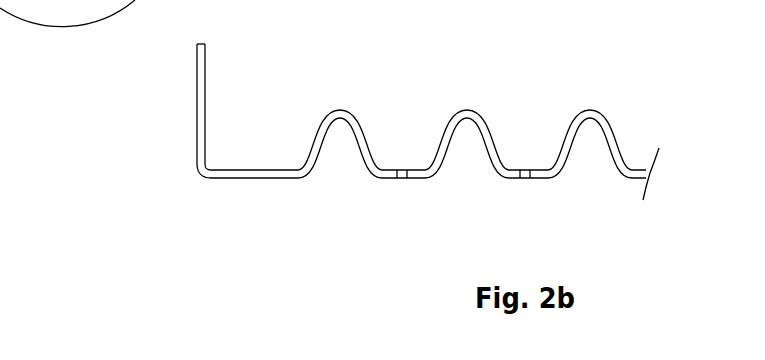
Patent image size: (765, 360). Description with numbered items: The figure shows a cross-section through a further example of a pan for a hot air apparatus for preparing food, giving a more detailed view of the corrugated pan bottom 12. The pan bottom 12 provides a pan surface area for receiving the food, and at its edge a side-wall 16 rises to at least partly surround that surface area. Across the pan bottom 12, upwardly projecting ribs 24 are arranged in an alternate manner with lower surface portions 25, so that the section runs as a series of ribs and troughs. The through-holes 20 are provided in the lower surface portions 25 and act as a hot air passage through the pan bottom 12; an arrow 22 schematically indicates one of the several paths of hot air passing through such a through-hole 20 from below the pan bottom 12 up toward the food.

The pan bottom 12 is at (254, 184).
The side-walls 16 is at (197, 80).
The through-holes 20 is at (525, 178).
The arrow 22 is at (406, 137).
The upwardly projecting ribs 24 is at (350, 104).
The lower surface portions 25 is at (512, 156).